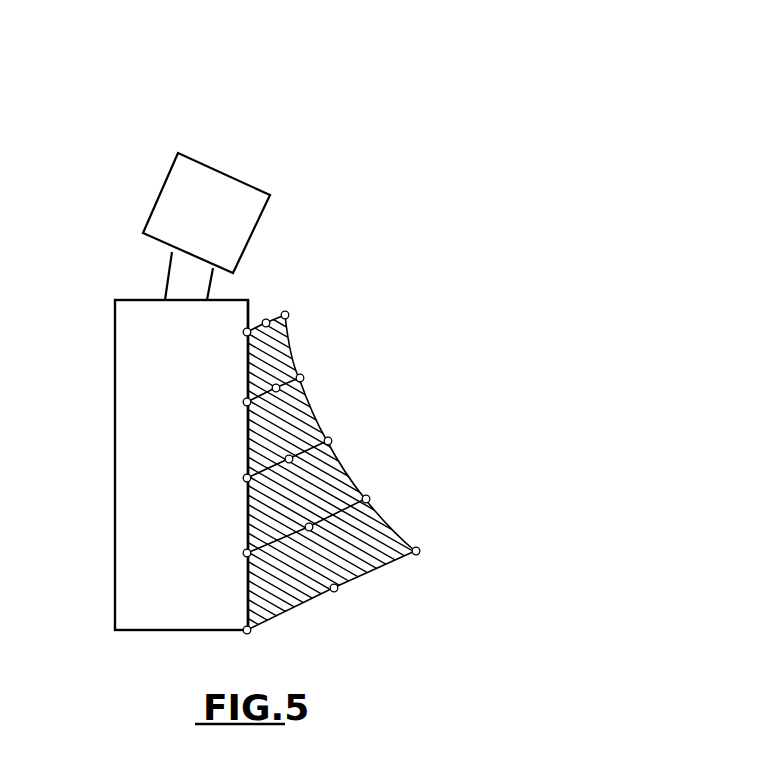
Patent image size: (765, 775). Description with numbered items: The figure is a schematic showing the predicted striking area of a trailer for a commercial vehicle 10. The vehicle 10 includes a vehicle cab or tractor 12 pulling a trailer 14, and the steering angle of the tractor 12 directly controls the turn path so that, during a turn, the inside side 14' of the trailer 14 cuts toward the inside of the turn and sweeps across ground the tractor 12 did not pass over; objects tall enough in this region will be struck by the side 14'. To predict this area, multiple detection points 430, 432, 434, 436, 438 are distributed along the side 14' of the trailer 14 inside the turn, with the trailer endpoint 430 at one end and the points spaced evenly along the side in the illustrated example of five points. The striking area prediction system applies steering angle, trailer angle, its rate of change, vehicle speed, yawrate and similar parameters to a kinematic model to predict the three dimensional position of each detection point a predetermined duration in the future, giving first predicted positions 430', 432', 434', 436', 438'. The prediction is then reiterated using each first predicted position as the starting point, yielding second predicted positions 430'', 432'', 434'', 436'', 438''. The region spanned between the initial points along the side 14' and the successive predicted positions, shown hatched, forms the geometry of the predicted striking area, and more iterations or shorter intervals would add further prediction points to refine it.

The commercial vehicle 10 is at (320, 136).
The vehicle cab or tractor 12 is at (245, 213).
The trailer 14 is at (155, 465).
The inside side of the trailer 14' is at (282, 448).
The trailer endpoint detection point 430 is at (214, 608).
The predicted detection point position at t1 430' is at (372, 611).
The predicted detection point position at t2 430'' is at (453, 572).
The detection point 432 is at (207, 544).
The predicted detection point position at t1 432' is at (377, 528).
The predicted detection point position at t2 432'' is at (421, 499).
The detection point 434 is at (207, 469).
The predicted detection point position at t1 434' is at (345, 462).
The predicted detection point position at t2 434'' is at (374, 429).
The detection point 436 is at (207, 393).
The predicted detection point position at t1 436' is at (332, 393).
The predicted detection point position at t2 436'' is at (347, 366).
The detection point 438 is at (207, 323).
The predicted detection point position at t1 438' is at (316, 326).
The predicted detection point position at t2 438'' is at (327, 300).